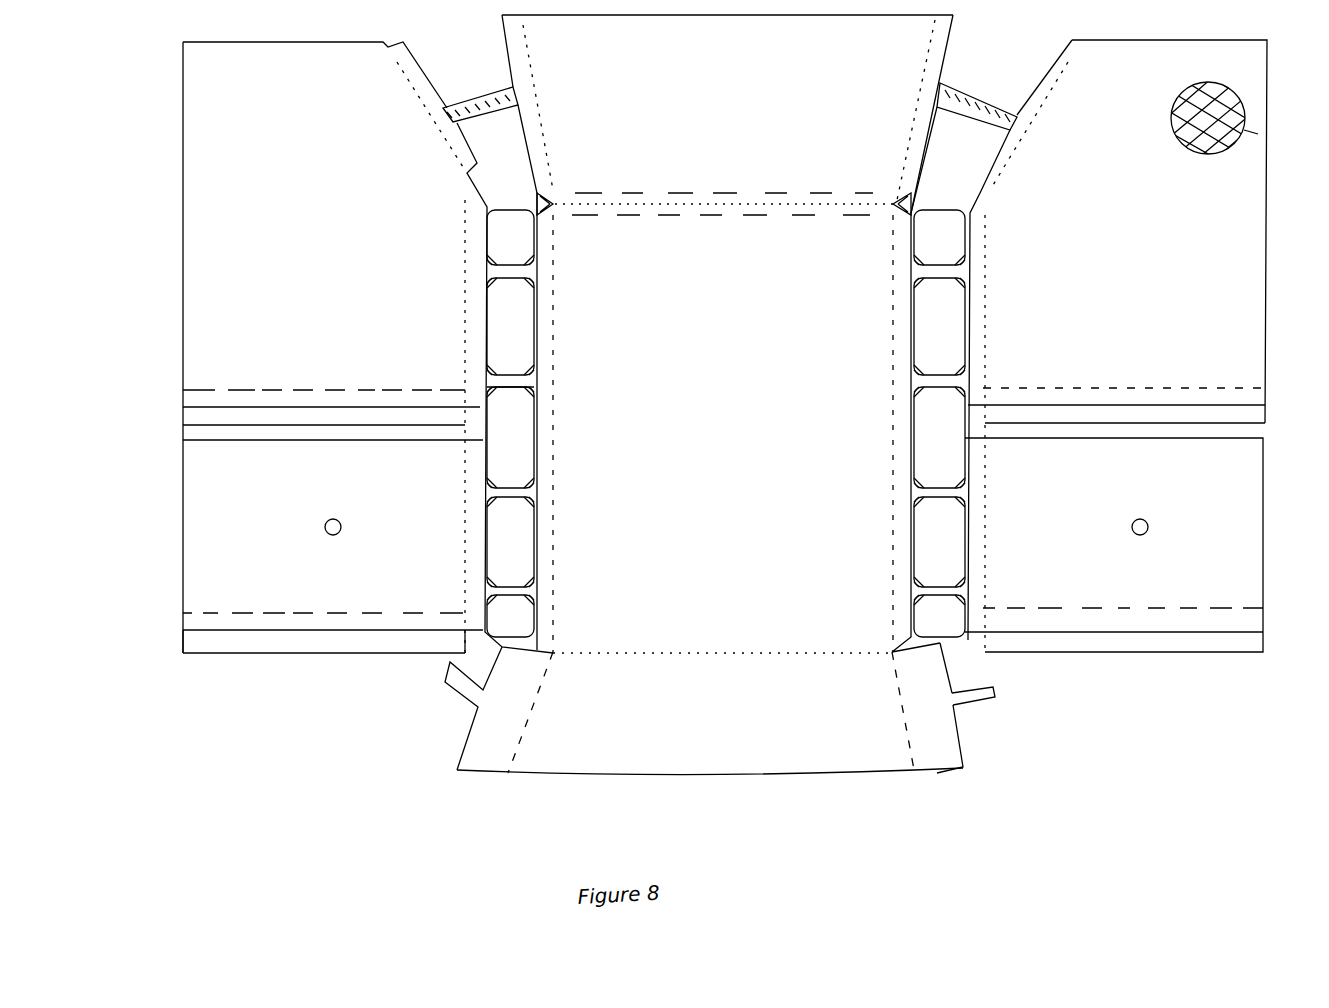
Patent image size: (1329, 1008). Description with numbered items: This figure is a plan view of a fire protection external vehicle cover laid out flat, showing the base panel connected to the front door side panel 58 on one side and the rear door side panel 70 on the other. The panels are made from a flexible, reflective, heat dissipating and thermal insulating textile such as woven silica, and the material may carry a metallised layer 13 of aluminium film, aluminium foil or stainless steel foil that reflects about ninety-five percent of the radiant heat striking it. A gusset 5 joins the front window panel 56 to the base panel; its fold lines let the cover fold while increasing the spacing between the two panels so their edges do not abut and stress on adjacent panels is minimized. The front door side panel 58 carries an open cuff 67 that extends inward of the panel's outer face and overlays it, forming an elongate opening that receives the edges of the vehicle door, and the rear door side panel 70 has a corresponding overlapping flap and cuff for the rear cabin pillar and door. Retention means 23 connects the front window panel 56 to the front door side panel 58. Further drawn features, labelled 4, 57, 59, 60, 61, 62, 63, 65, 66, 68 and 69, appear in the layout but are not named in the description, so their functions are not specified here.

The tab 4 is at (488, 100).
The gusset 5 is at (760, 217).
The metallised layer 13 is at (1258, 134).
The retention means 23 is at (253, 620).
The front window panel 56 is at (937, 760).
The connecting tab 57 is at (535, 143).
The front door side panel 58 is at (324, 347).
The side panel 59 is at (1117, 346).
The lower strip 60 is at (315, 645).
The bottom panel 61 is at (710, 713).
The top panel 62 is at (727, 114).
The center panel 63 is at (724, 434).
The slot bar 65 is at (546, 443).
The slotted column 66 is at (905, 318).
The open cuff 67 is at (258, 397).
The bottom flap 68 is at (478, 728).
The fold strip 69 is at (202, 412).
The rear door side panel 70 is at (346, 494).